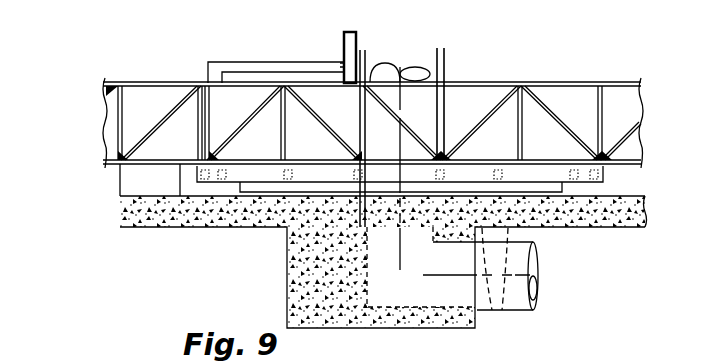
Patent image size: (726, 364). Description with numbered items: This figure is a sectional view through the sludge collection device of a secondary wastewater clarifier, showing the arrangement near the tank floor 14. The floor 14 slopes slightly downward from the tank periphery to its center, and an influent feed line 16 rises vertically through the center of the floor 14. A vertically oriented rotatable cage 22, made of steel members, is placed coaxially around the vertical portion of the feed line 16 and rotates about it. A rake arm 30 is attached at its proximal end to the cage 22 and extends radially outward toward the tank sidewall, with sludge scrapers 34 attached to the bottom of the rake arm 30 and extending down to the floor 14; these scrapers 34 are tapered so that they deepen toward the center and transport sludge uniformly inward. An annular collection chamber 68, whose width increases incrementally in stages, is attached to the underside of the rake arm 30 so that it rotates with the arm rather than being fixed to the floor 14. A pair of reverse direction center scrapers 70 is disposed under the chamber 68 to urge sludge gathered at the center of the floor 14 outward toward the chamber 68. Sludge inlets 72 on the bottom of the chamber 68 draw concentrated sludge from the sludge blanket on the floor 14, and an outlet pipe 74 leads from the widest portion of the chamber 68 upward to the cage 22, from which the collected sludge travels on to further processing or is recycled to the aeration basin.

The rake arm 30 is at (160, 82).
The outlet pipe 74 is at (268, 67).
The rotatable cage 22 is at (363, 50).
The feed line 16 is at (402, 64).
The annular collection chamber 68 is at (508, 164).
The reverse direction center scrapers 70 is at (558, 196).
The sludge scrapers 34 is at (133, 183).
The floor 14 is at (623, 198).
The sludge inlets 72 is at (508, 318).